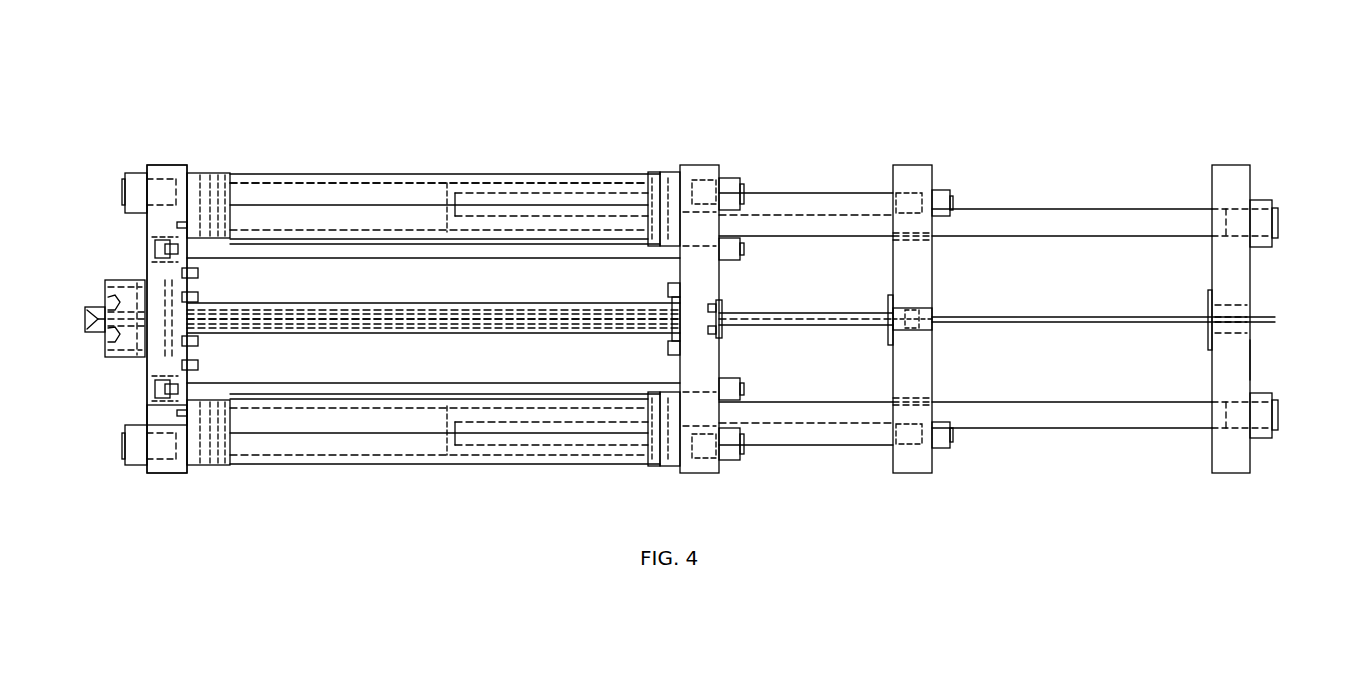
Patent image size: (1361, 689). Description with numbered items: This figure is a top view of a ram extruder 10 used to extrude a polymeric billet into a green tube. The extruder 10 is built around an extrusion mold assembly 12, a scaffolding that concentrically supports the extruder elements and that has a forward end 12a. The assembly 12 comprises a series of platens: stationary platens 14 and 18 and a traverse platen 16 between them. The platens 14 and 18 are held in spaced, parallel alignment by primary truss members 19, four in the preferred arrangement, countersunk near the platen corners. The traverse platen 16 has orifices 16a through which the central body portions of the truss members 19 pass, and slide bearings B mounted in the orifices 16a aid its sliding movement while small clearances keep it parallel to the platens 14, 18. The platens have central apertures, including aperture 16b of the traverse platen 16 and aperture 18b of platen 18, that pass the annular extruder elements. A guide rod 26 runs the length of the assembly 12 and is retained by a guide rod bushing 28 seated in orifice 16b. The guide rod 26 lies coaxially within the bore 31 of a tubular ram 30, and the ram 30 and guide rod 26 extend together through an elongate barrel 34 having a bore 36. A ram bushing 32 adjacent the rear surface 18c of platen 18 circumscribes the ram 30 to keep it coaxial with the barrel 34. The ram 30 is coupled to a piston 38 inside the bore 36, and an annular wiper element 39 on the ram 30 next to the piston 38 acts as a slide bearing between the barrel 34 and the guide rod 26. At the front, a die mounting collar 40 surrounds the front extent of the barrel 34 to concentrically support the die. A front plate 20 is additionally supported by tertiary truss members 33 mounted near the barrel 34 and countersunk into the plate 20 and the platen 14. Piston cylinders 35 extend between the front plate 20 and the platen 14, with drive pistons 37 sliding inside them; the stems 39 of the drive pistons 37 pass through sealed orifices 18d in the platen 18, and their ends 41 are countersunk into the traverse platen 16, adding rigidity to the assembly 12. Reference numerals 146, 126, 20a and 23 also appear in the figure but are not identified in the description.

The extruder 10 is at (1089, 63).
The extrusion mold assembly 12 is at (419, 275).
The forward end 12a is at (147, 415).
The stationary platen 14 is at (1235, 165).
The shaft end 146 is at (1250, 312).
The plate surface 126 is at (1250, 364).
The traverse platen 16 is at (917, 165).
The orifices 16a is at (926, 228).
The central aperture 16b is at (936, 328).
The stationary platen 18 is at (706, 165).
The central aperture 18b is at (725, 317).
The rear surface 18c is at (722, 362).
The orifices 18d is at (715, 193).
The primary truss members 19 is at (1082, 210).
The front plate 20 is at (155, 165).
The pin 20a is at (147, 400).
The cylinder liner 23 is at (282, 186).
The guide rod 26 is at (811, 328).
The guide rod bushing 28 is at (936, 310).
The tubular ram 30 is at (815, 315).
The bore 31 is at (500, 332).
The ram bushing 32 is at (720, 306).
The tertiary truss members 33 is at (574, 258).
The barrel 34 is at (289, 302).
The piston cylinders 35 is at (514, 172).
The bore 36 is at (347, 315).
The drive pistons 37 is at (449, 182).
The piston 38 is at (426, 317).
The wiper element 39 is at (393, 332).
The die mounting collar 40 is at (125, 280).
The ends 41 is at (900, 192).
The slide bearings B is at (893, 240).